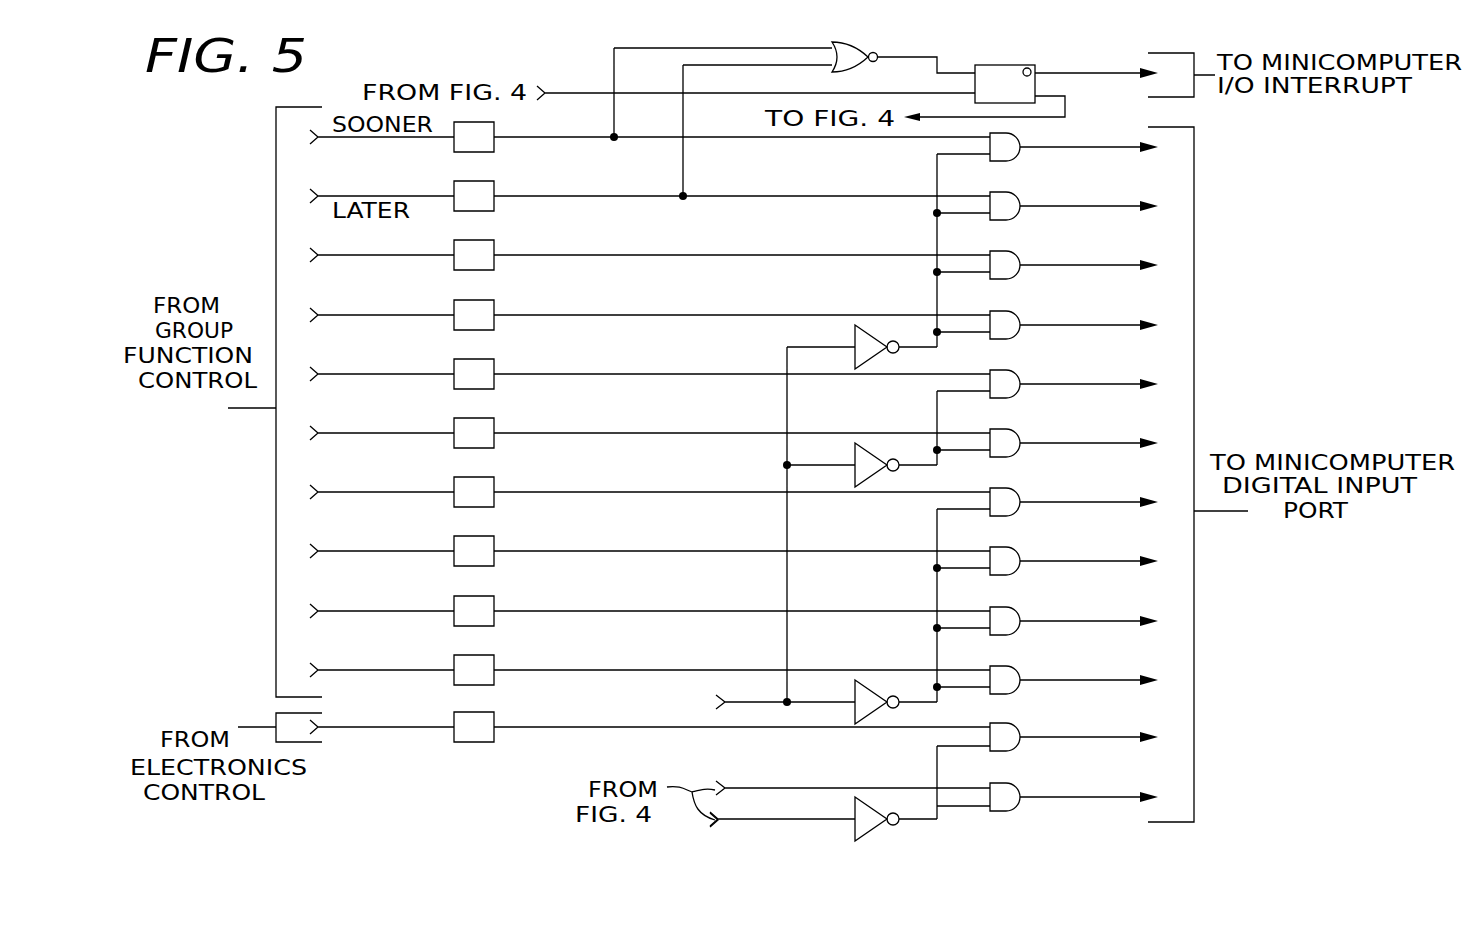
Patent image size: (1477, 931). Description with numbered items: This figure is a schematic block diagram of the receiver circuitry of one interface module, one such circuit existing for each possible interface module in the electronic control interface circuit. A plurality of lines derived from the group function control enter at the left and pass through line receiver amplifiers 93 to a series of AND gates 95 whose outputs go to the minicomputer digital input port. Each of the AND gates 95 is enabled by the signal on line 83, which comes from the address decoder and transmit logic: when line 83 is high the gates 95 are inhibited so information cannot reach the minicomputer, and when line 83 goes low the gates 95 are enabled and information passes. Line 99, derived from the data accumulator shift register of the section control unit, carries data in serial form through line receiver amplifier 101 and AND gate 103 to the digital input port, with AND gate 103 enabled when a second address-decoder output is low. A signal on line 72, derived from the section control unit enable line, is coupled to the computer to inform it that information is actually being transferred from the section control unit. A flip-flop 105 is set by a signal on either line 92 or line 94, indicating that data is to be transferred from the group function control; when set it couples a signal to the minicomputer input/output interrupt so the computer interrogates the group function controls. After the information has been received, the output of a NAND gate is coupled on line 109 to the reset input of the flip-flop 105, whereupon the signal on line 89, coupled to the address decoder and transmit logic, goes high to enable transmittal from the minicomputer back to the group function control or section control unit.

The section control unit enable line 72 is at (772, 788).
The line 83 is at (728, 700).
The line 89 is at (1047, 123).
The line 92 is at (334, 140).
The line receiver amplifiers 93 is at (454, 150).
The line 94 is at (340, 196).
The AND gates 95 is at (1020, 370).
The line 99 is at (350, 727).
The line receiver amplifier 101 is at (453, 738).
The AND gate 103 is at (1018, 727).
The flip-flop 105 is at (1017, 65).
The line 109 is at (582, 82).